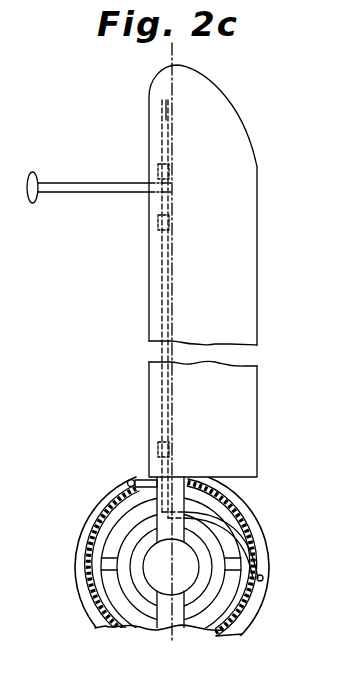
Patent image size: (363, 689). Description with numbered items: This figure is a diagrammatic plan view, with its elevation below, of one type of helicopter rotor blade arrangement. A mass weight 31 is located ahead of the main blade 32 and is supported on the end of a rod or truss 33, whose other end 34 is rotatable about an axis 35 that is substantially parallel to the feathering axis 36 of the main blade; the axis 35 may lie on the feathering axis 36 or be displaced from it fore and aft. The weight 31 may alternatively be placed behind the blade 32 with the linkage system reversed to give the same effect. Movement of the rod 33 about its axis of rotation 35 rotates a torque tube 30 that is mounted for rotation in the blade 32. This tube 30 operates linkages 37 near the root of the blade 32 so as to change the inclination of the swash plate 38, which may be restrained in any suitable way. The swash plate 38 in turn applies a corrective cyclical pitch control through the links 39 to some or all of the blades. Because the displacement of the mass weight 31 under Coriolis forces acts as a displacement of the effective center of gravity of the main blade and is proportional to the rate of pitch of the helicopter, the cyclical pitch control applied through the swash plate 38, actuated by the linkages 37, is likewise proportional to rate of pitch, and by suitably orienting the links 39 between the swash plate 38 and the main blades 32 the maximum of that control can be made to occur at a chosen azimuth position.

The torque tube 30 is at (167, 207).
The mass weight 31 is at (43, 171).
The main blade 32 is at (246, 155).
The rod or truss 33 is at (99, 195).
The other end of rod 34 is at (170, 188).
The axis of rotation 35 is at (165, 118).
The feathering axis 36 is at (172, 263).
The linkages 37 is at (203, 514).
The swash plate 38 is at (254, 603).
The links 39 is at (141, 478).